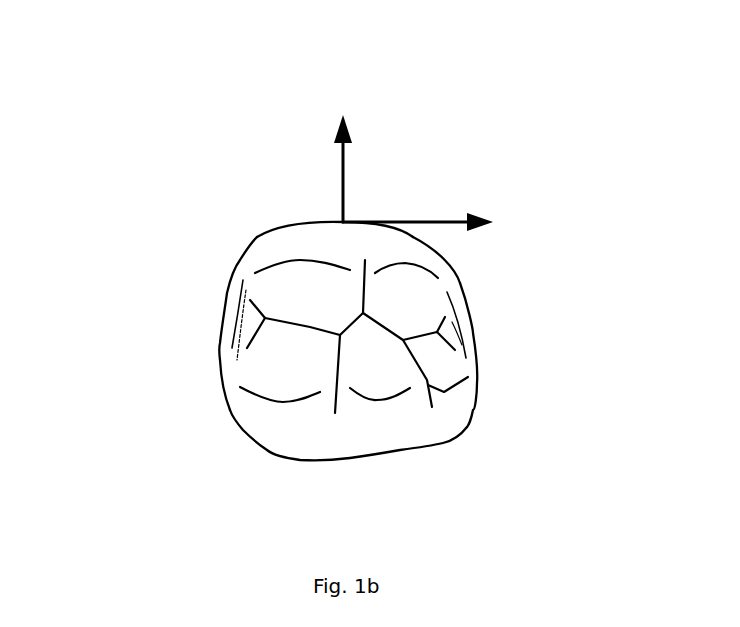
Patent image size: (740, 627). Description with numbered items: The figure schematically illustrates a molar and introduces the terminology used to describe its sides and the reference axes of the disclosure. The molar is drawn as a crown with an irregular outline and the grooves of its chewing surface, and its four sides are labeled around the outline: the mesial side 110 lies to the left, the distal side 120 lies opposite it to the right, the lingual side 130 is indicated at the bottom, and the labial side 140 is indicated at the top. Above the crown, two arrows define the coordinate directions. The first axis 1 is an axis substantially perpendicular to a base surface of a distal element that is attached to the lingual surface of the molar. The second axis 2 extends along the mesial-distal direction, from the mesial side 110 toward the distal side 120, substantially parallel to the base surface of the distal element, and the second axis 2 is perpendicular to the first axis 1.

The mesial side 110 is at (213, 318).
The distal side 120 is at (495, 320).
The lingual side 130 is at (358, 485).
The labial side 140 is at (283, 200).
The first axis 1 is at (351, 152).
The second axis 2 is at (418, 206).